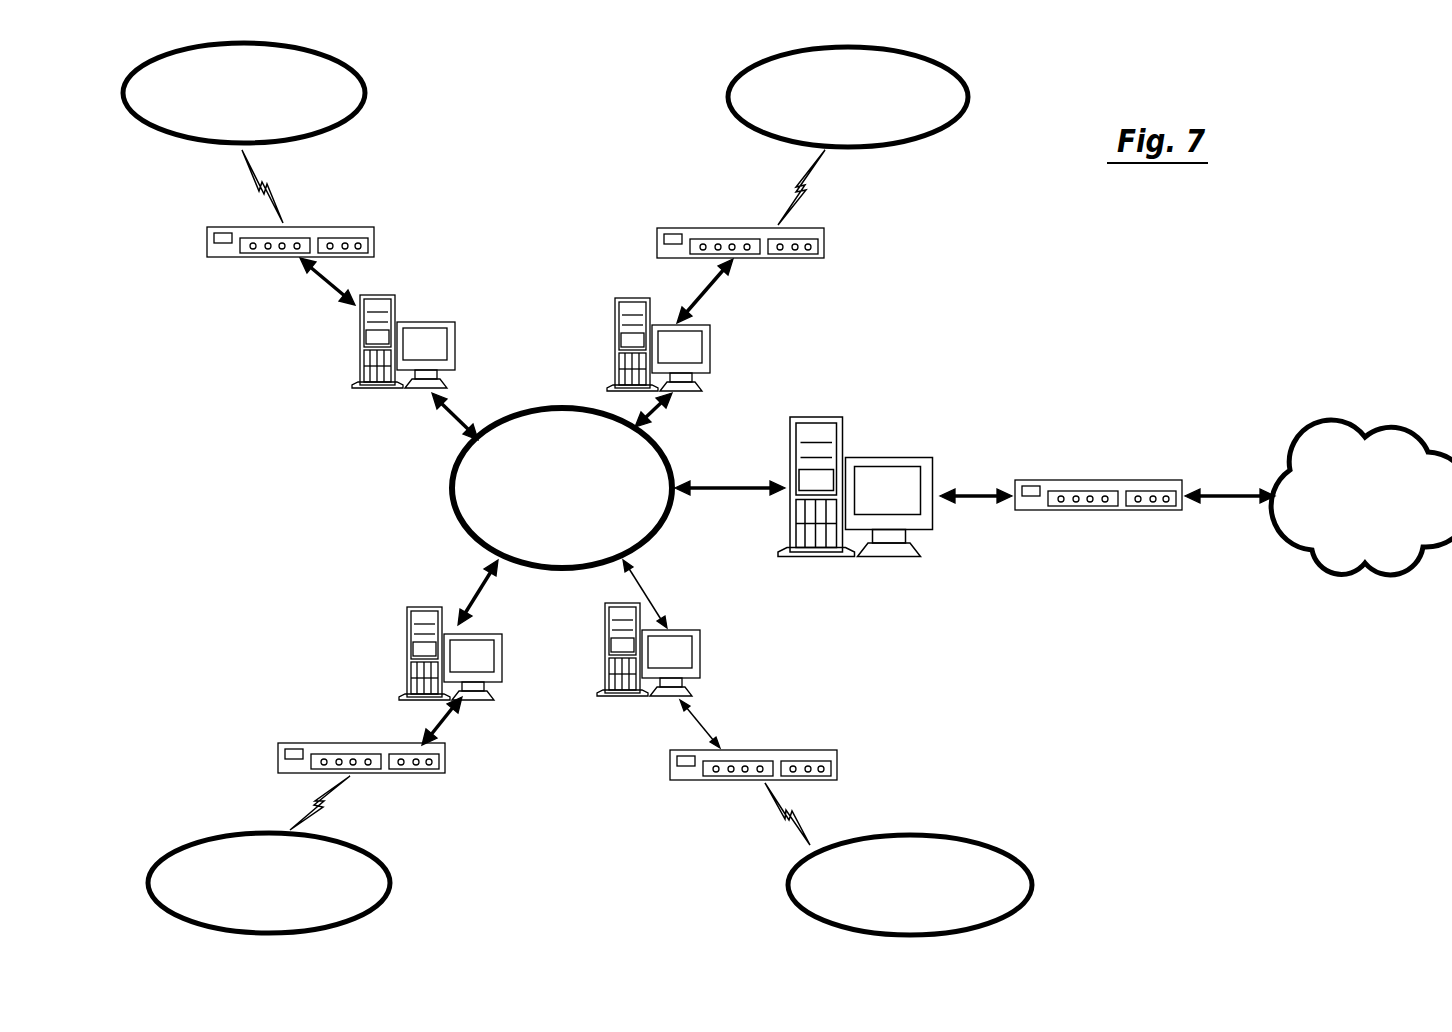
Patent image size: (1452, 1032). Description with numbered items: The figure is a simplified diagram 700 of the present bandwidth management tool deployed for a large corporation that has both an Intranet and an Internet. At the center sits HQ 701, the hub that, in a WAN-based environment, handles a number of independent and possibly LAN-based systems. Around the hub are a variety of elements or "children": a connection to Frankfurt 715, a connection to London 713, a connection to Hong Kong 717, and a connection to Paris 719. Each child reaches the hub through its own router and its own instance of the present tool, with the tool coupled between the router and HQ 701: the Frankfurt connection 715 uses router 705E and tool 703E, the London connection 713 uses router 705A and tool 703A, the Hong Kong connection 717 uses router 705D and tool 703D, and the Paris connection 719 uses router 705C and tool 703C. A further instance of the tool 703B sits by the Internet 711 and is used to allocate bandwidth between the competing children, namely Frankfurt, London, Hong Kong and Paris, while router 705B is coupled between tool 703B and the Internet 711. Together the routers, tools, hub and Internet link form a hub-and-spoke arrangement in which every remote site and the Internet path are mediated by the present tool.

The simplified diagram 700 is at (405, 493).
The HQ 701 is at (545, 418).
The present tool 703A is at (712, 360).
The present tool 703B is at (882, 455).
The present tool 703C is at (690, 630).
The present tool 703D is at (428, 606).
The present tool 703E is at (386, 390).
The router 705A is at (825, 244).
The router 705B is at (1110, 478).
The router 705C is at (668, 765).
The router 705D is at (455, 766).
The router 705E is at (376, 240).
The Internet 711 is at (1284, 545).
The connection to London 713 is at (776, 143).
The connection to Frankfurt 715 is at (366, 96).
The connection to Hong Kong 717 is at (224, 833).
The connection to Paris 719 is at (790, 882).